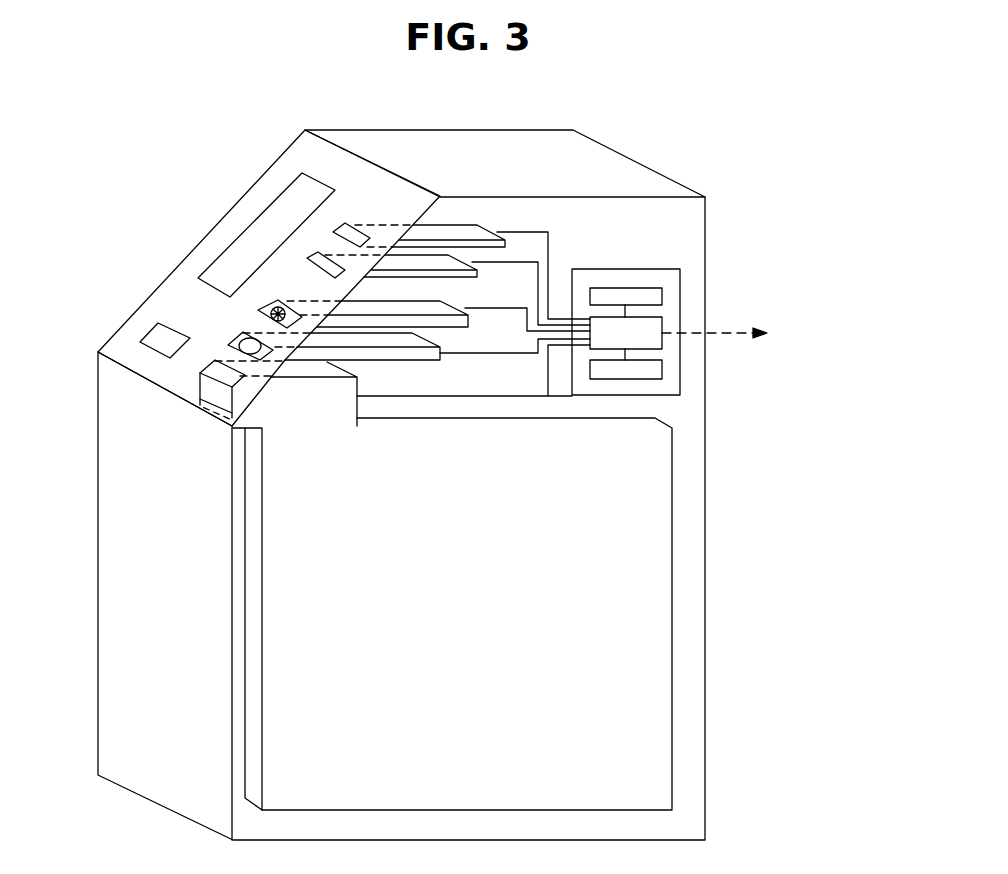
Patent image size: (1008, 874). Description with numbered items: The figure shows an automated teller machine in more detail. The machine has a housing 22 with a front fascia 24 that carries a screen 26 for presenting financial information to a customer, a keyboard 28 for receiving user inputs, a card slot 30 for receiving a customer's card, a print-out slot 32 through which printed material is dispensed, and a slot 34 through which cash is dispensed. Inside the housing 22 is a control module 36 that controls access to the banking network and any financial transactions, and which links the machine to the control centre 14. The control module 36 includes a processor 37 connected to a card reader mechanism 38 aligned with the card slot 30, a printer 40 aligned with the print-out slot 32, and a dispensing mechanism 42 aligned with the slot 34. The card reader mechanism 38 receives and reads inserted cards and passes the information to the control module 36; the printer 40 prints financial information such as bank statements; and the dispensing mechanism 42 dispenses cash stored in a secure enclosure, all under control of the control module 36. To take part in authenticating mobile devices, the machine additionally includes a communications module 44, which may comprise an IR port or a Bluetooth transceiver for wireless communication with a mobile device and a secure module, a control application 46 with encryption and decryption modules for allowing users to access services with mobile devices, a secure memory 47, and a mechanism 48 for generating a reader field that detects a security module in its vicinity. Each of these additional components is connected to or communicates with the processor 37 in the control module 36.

The control centre 14 is at (778, 337).
The housing 22 is at (98, 563).
The front fascia 24 is at (307, 153).
The screen 26 is at (253, 232).
The keyboard 28 is at (150, 337).
The card slot 30 is at (353, 230).
The print-out slot 32 is at (325, 272).
The slot 34 is at (227, 380).
The control module 36 is at (661, 352).
The processor 37 is at (655, 341).
The card reader mechanism 38 is at (468, 224).
The printer 40 is at (455, 278).
The dispensing mechanism 42 is at (298, 413).
The communications module 44 is at (450, 328).
The control application 46 is at (633, 288).
The secure memory 47 is at (620, 380).
The mechanism 48 is at (418, 361).